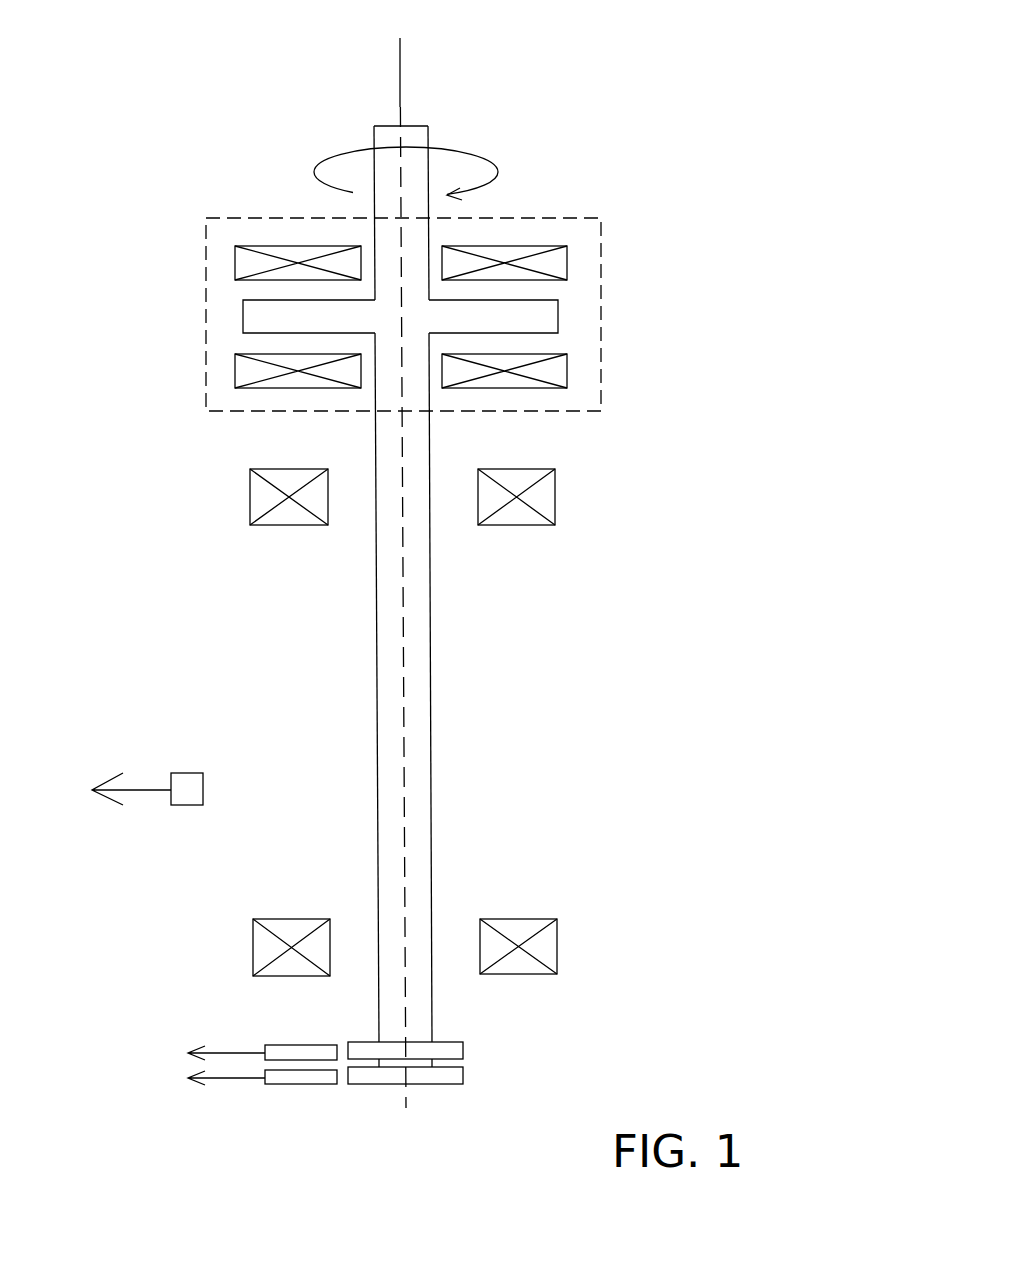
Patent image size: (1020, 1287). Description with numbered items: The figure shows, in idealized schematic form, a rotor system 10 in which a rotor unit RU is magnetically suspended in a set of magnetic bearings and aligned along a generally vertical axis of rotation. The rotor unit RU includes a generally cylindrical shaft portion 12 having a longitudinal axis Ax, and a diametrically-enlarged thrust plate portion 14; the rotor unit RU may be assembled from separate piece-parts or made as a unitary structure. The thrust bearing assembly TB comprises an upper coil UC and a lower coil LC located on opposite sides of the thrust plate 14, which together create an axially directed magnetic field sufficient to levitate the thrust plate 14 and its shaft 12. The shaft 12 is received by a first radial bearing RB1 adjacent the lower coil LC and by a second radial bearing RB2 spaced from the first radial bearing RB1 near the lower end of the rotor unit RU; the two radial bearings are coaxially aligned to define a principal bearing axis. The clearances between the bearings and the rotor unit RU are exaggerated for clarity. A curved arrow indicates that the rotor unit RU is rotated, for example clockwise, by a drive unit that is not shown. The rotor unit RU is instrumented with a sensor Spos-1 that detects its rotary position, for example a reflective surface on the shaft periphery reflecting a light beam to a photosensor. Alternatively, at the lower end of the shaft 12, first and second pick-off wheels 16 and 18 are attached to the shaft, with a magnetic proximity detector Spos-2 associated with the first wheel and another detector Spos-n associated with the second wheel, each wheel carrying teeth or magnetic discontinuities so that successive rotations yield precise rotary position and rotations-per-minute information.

The rotor system 10 is at (385, 592).
The shaft portion 12 is at (437, 735).
The thrust plate portion 14 is at (567, 313).
The first pick-off wheel 16 is at (463, 1049).
The second pick-off wheel 18 is at (463, 1073).
The longitudinal axis Ax is at (397, 92).
The thrust bearing assembly TB is at (223, 217).
The upper coil UC is at (578, 230).
The lower coil LC is at (573, 367).
The first radial bearing RB1 is at (558, 517).
The second radial bearing RB2 is at (565, 961).
The rotor unit RU is at (352, 662).
The sensor Spos-1 is at (183, 808).
The magnetic proximity detector Spos-2 is at (283, 1038).
The magnetic proximity detector Spos-n is at (248, 1125).